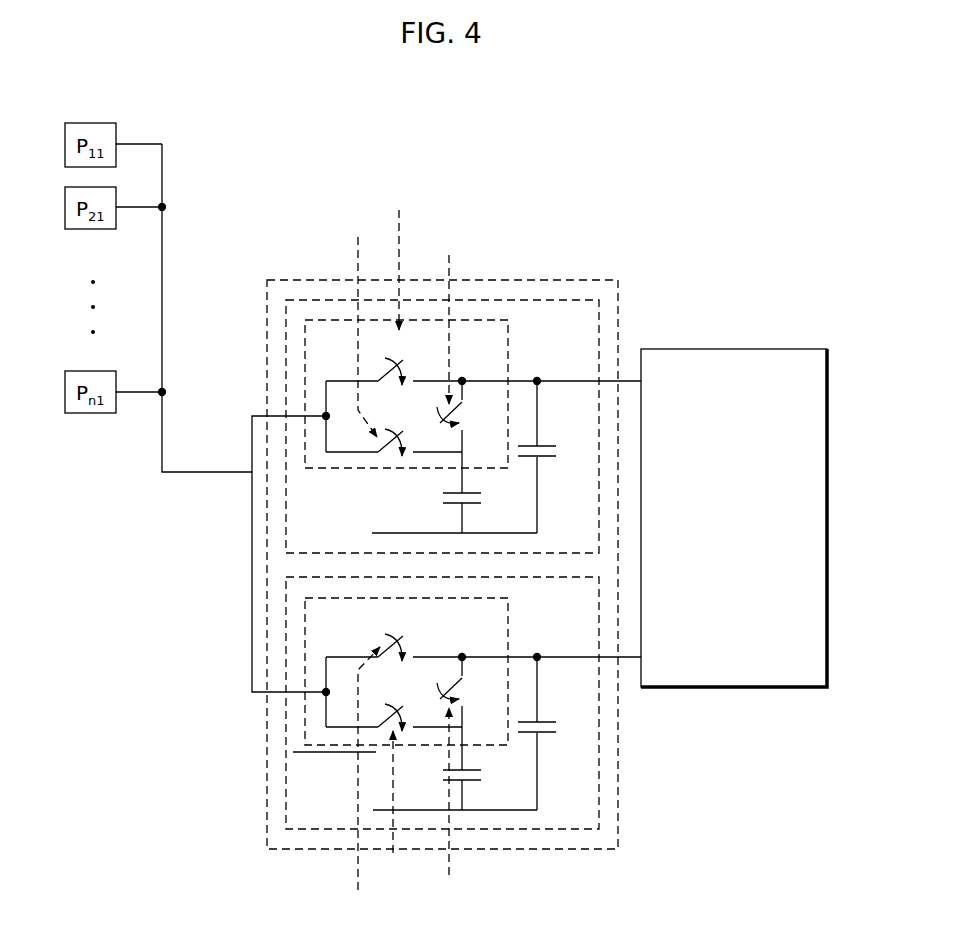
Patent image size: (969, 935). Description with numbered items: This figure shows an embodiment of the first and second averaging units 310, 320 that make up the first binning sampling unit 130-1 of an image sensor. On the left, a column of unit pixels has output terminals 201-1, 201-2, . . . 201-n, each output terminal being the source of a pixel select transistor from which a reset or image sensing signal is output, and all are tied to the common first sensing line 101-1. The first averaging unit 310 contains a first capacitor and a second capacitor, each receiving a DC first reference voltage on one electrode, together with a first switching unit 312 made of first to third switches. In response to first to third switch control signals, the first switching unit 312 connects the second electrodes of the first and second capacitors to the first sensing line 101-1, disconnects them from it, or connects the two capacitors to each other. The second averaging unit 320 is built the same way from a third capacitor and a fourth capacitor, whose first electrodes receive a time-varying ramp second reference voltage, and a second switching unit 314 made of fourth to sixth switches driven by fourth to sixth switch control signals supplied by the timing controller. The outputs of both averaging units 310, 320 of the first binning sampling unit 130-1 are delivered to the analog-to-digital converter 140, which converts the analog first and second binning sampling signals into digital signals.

The output terminal 201-1 is at (152, 143).
The pixel output line 201-2 is at (152, 206).
The pixel output line 201-n is at (152, 391).
The first sensing line 101-1 is at (163, 242).
The first binning sampling unit 130-1 is at (484, 280).
The first averaging unit 310 is at (538, 300).
The first switching unit 312 is at (509, 330).
The second switching unit 314 is at (509, 607).
The second averaging unit 320 is at (561, 830).
The analog-to-digital converter 140 is at (723, 349).